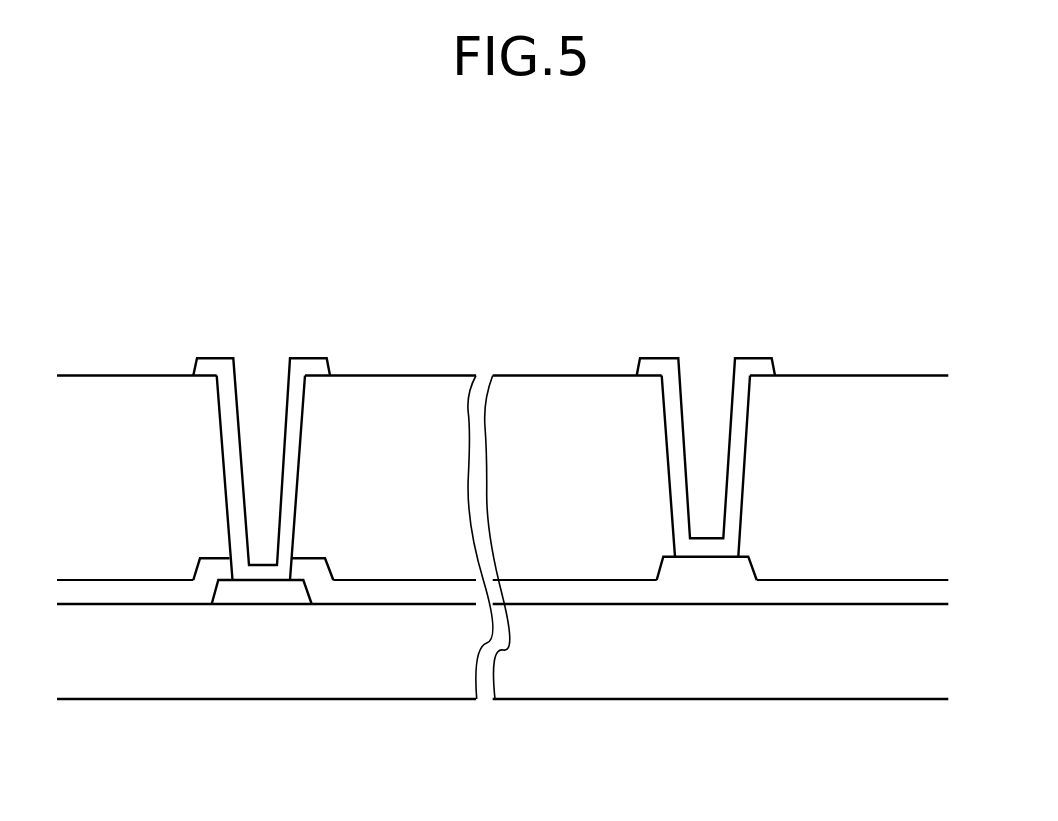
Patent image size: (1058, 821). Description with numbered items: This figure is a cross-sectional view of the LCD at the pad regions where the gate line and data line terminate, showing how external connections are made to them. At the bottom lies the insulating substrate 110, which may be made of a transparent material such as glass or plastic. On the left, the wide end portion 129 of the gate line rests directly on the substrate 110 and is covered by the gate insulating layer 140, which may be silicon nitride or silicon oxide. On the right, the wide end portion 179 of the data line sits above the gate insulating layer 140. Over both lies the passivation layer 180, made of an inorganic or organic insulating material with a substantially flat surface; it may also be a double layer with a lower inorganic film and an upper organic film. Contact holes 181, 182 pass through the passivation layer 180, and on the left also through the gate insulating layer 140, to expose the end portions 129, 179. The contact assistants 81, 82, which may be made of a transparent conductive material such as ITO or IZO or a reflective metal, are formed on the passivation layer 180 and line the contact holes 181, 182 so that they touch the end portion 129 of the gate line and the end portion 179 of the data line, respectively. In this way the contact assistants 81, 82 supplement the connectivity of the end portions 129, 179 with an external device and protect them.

The contact assistant 81 is at (210, 365).
The contact assistant 82 is at (655, 365).
The contact hole 181 is at (300, 437).
The contact hole 182 is at (747, 438).
The passivation layer 180 is at (398, 493).
The gate insulating layer 140 is at (135, 590).
The end portion of gate line 129 is at (265, 592).
The end portion of data line 179 is at (710, 568).
The insulating substrate 110 is at (815, 657).